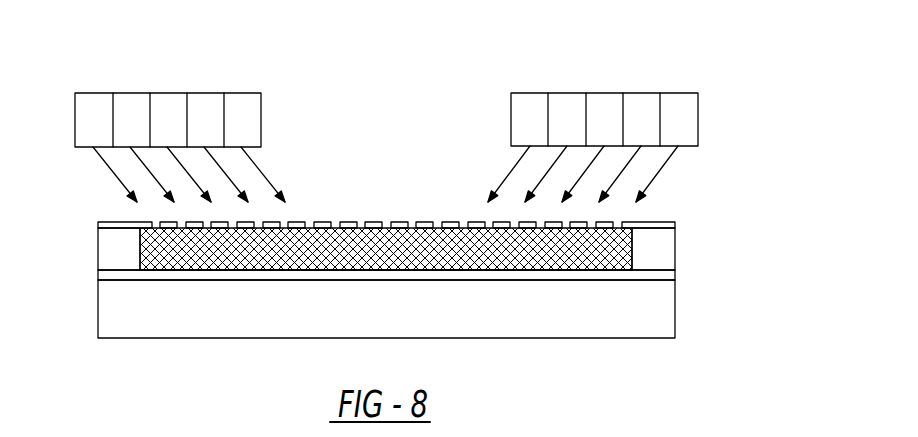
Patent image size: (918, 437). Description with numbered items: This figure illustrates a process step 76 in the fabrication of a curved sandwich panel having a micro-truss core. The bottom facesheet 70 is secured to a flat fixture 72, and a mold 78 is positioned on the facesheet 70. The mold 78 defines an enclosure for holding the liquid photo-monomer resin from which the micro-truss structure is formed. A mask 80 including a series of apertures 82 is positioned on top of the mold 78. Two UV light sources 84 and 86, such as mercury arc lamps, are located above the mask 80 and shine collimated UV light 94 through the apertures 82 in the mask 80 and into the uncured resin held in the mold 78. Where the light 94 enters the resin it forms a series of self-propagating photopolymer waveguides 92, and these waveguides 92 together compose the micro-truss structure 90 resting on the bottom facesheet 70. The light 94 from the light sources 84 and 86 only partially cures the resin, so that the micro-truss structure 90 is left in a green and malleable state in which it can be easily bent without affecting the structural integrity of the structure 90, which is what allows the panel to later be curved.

The bottom facesheet 70 is at (653, 274).
The flat fixture 72 is at (613, 315).
The process step 76 is at (673, 75).
The mold 78 is at (657, 250).
The mask 80 is at (350, 218).
The apertures 82 is at (410, 222).
The UV light source 84 is at (262, 120).
The UV light source 86 is at (510, 120).
The micro-truss structure 90 is at (272, 248).
The self-propagating photopolymer waveguides 92 is at (483, 248).
The collimated UV light 94 is at (112, 172).